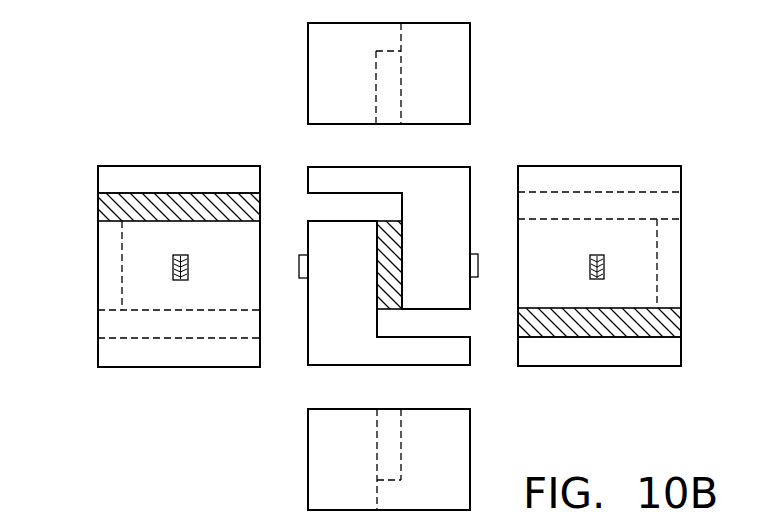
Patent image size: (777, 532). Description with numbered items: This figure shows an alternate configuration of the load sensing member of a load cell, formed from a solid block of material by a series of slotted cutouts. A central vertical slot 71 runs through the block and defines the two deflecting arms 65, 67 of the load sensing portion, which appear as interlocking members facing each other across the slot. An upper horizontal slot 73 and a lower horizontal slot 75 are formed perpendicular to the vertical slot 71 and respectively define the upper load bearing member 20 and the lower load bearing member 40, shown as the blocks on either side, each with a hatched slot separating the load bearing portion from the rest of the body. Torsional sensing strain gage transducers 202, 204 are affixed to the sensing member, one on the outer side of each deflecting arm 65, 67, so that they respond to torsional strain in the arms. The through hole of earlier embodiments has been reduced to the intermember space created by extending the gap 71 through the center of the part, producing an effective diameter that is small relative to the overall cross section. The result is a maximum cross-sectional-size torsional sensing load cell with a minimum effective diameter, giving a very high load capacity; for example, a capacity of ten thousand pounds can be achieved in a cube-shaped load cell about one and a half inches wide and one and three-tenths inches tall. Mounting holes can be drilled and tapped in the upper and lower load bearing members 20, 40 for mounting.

The upper load bearing member 20 is at (98, 183).
The upper horizontal slot 73 is at (101, 213).
The deflecting arm 67 is at (328, 237).
The deflecting arm 65 is at (450, 292).
The central vertical slot 71 is at (390, 115).
The lower horizontal slot 75 is at (672, 316).
The lower load bearing member 40 is at (682, 352).
The torsional sensing strain gage transducer 202 is at (300, 268).
The torsional sensing strain gage transducer 204 is at (478, 258).